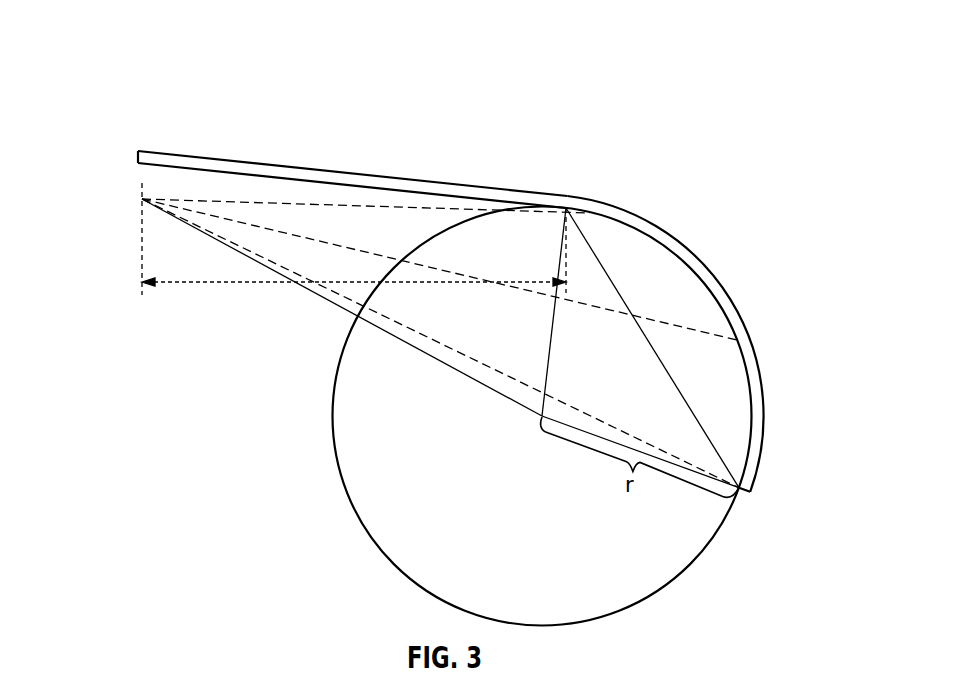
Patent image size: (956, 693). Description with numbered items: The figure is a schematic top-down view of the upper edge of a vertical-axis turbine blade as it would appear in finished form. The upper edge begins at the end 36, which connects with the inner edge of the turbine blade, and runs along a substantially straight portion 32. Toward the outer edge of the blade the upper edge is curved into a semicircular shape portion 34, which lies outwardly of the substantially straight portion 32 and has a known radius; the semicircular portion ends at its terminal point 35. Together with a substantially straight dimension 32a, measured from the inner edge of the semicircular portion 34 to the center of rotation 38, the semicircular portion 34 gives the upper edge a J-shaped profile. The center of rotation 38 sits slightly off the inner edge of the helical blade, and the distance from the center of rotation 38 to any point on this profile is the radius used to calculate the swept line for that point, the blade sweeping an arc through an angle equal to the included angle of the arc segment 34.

The substantially straight portion 32 is at (443, 188).
The substantially straight dimension 32a is at (258, 285).
The semicircular shape portion 34 is at (722, 282).
The end of curved portion 35 is at (742, 497).
The end 36 is at (138, 153).
The center of rotation 38 is at (160, 198).